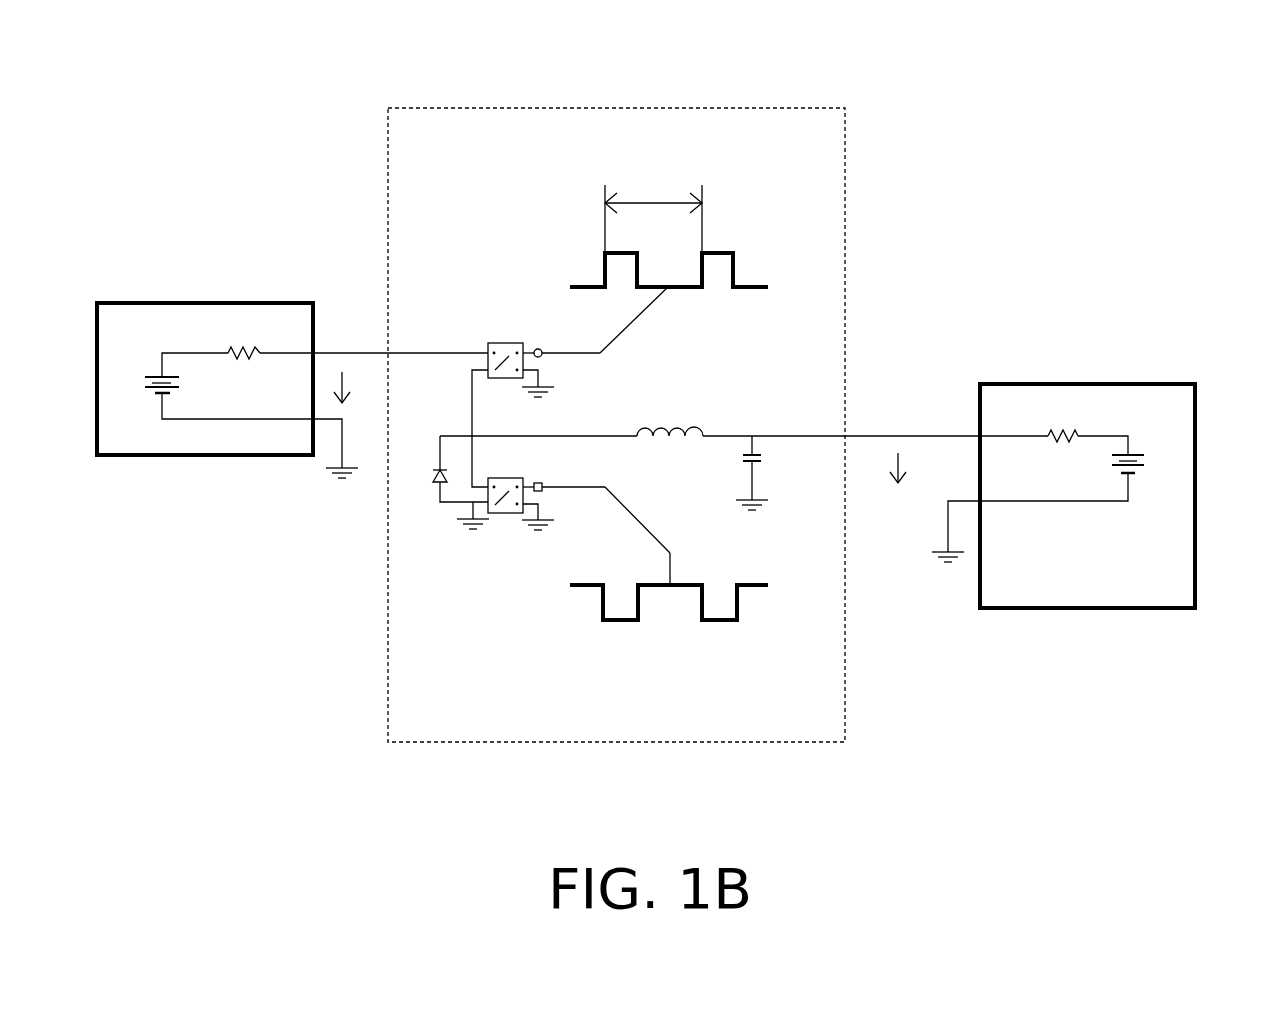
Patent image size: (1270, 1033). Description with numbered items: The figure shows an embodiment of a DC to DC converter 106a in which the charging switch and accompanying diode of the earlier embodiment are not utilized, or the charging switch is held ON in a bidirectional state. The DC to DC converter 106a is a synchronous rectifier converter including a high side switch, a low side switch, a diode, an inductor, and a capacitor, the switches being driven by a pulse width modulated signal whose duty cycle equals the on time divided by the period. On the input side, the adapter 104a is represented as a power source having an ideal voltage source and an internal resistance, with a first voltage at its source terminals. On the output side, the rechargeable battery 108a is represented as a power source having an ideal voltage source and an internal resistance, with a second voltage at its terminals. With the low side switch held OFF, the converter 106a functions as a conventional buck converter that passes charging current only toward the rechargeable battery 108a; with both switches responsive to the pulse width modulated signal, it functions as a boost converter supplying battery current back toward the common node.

The adapter 104a is at (122, 303).
The DC to DC converter 106a is at (478, 108).
The rechargeable battery 108a is at (1123, 384).